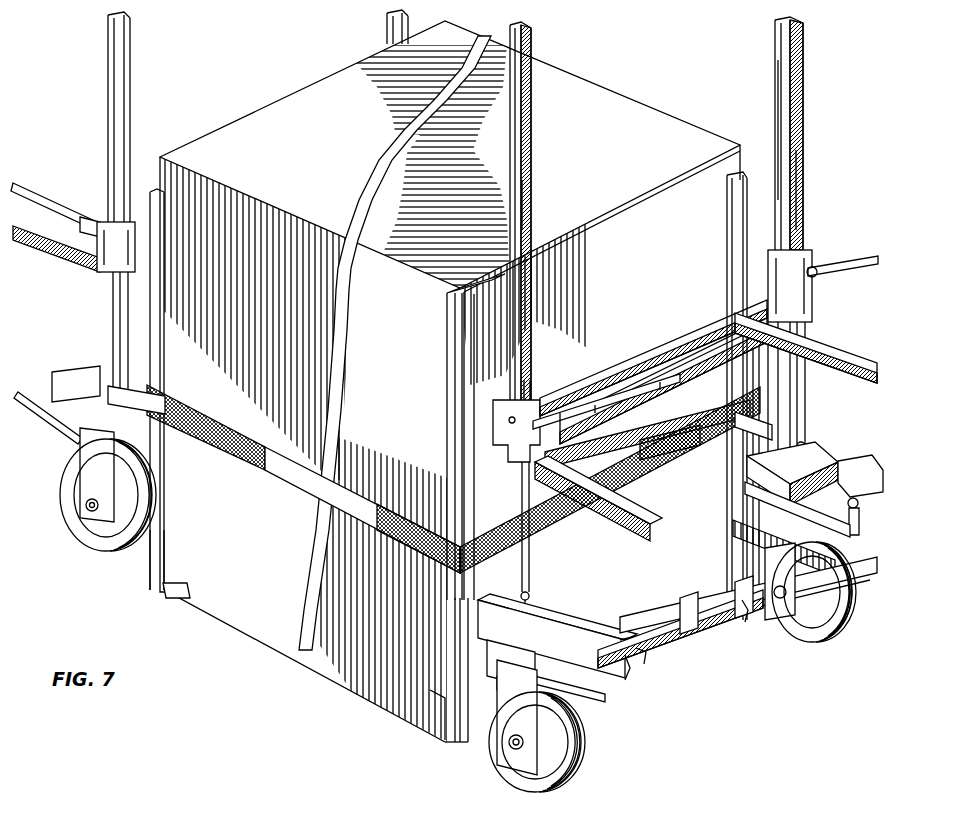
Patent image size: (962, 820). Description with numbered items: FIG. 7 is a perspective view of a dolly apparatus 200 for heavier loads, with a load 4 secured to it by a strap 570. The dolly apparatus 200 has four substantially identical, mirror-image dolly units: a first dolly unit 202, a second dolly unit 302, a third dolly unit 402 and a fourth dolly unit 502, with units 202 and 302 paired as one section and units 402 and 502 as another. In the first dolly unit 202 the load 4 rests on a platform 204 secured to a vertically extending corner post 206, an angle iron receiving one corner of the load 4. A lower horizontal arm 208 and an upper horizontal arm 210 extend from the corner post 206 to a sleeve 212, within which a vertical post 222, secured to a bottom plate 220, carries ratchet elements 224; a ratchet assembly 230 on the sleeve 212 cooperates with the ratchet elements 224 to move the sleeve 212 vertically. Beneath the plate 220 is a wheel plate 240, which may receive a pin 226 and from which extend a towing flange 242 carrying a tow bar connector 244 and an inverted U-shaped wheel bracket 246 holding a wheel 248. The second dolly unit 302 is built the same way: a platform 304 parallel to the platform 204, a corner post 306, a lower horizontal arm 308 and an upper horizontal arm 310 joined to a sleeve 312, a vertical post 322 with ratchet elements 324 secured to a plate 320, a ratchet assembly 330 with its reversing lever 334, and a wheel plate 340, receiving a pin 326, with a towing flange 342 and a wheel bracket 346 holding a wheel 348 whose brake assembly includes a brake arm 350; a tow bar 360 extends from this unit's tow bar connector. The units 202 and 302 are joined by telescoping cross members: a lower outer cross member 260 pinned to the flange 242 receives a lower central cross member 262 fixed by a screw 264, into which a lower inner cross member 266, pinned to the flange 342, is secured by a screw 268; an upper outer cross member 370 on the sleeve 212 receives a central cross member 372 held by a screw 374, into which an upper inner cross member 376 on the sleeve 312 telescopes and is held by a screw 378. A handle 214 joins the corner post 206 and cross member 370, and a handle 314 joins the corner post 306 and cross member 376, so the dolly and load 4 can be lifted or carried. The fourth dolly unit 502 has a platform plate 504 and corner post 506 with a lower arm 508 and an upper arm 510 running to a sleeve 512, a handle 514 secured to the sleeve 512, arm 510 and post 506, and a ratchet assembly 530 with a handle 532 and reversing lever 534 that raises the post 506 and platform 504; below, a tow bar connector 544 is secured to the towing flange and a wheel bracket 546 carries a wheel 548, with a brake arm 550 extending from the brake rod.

The load 4 is at (655, 105).
The dolly apparatus 200 is at (810, 100).
The first dolly unit 202 is at (802, 163).
The load support platform 204 is at (728, 620).
The corner post 206 is at (738, 218).
The lower horizontal arm 208 is at (750, 445).
The upper horizontal arm 210 is at (758, 300).
The sleeve 212 is at (803, 396).
The handle 214 is at (836, 362).
The bottom plate 220 is at (820, 458).
The vertical post 222 is at (778, 103).
The ratchet elements 224 is at (803, 212).
The pin 226 is at (803, 445).
The ratchet assembly 230 is at (812, 292).
The wheel plate 240 is at (762, 482).
The towing flange 242 is at (860, 470).
The tow bar connector 244 is at (862, 515).
The wheel bracket 246 is at (786, 618).
The wheel 248 is at (832, 628).
The lower outer cross member 260 is at (850, 574).
The lower central cross member 262 is at (688, 596).
The screw 264 is at (750, 625).
The lower inner cross member 266 is at (628, 670).
The screw 268 is at (740, 620).
The second dolly unit 302 is at (534, 138).
The load support platform 304 is at (445, 743).
The corner post 306 is at (440, 700).
The lower horizontal arm 308 is at (478, 600).
The upper horizontal arm 310 is at (455, 480).
The sleeve 312 is at (532, 520).
The handle 314 is at (608, 525).
The plate 320 is at (555, 618).
The vertical post 322 is at (535, 252).
The ratchet elements 324 is at (535, 205).
The pin 326 is at (530, 590).
The ratchet assembly 330 is at (530, 398).
The reversing lever 334 is at (492, 430).
The wheel plate 340 is at (487, 648).
The towing flange 342 is at (497, 680).
The wheel bracket 346 is at (505, 745).
The wheel 348 is at (580, 772).
The brake arm 350 is at (590, 700).
The tow bar 360 is at (640, 655).
The upper outer cross member 370 is at (722, 346).
The central cross member 372 is at (668, 450).
The screw 374 is at (613, 388).
The upper inner cross member 376 is at (628, 465).
The screw 378 is at (592, 412).
The third dolly unit 402 is at (383, 31).
The fourth dolly unit 502 is at (134, 140).
The platform plate 504 is at (166, 596).
The corner post 506 is at (162, 545).
The lower arm 508 is at (148, 420).
The upper arm 510 is at (166, 338).
The sleeve 512 is at (112, 332).
The handle 514 is at (92, 270).
The ratchet assembly 530 is at (100, 272).
The handle 532 is at (50, 190).
The reversing lever 534 is at (86, 220).
The tow bar connector 544 is at (60, 378).
The wheel bracket 546 is at (70, 520).
The wheel 548 is at (102, 540).
The brake arm 550 is at (52, 425).
The strap 570 is at (266, 452).